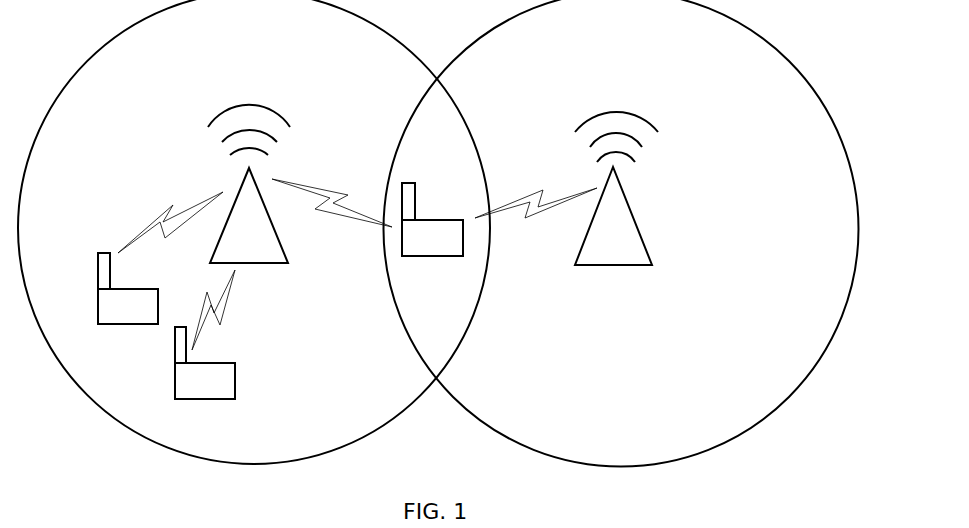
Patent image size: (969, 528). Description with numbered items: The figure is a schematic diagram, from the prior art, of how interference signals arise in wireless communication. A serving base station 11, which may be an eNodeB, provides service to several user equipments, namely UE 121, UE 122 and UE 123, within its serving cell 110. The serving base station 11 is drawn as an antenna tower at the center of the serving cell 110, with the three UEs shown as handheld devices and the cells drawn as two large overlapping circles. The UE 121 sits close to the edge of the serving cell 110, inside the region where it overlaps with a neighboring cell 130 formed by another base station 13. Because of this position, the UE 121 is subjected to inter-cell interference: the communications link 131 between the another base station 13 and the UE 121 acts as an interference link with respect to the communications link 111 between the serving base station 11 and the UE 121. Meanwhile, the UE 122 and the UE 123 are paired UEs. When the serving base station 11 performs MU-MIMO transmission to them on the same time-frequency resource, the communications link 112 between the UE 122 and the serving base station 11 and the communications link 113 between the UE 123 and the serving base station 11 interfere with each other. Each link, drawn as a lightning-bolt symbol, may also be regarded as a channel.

The serving cell 110 is at (385, 31).
The cell 130 is at (778, 52).
The serving base station 11 is at (235, 198).
The another base station 13 is at (630, 203).
The UE 121 is at (425, 200).
The UE 122 is at (214, 341).
The UE 123 is at (137, 271).
The communications link 111 is at (314, 167).
The communications link 112 is at (246, 299).
The communications link 113 is at (140, 205).
The communications link 131 is at (531, 179).